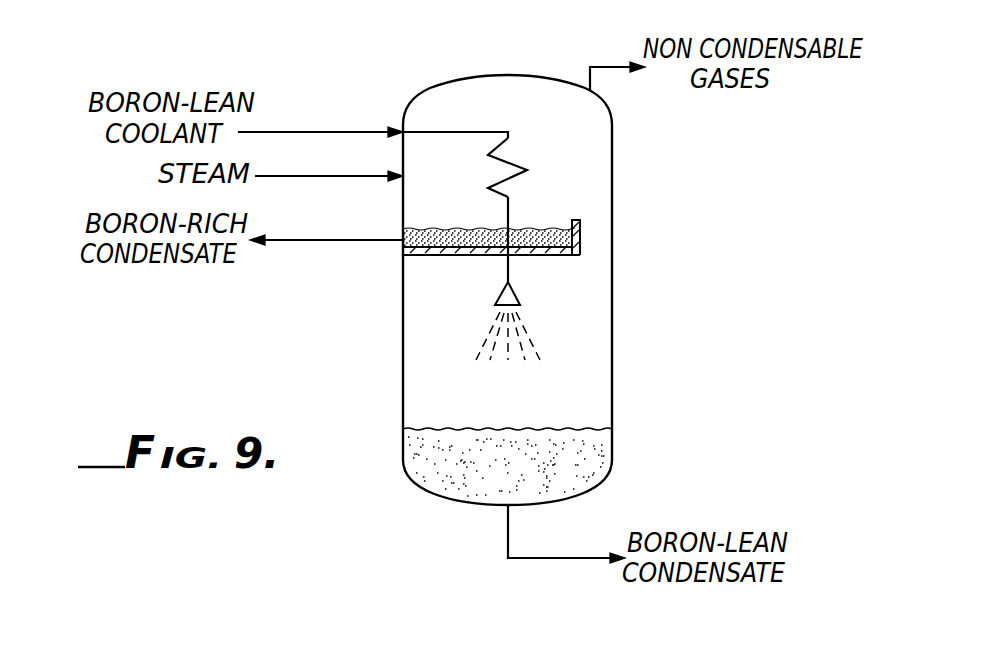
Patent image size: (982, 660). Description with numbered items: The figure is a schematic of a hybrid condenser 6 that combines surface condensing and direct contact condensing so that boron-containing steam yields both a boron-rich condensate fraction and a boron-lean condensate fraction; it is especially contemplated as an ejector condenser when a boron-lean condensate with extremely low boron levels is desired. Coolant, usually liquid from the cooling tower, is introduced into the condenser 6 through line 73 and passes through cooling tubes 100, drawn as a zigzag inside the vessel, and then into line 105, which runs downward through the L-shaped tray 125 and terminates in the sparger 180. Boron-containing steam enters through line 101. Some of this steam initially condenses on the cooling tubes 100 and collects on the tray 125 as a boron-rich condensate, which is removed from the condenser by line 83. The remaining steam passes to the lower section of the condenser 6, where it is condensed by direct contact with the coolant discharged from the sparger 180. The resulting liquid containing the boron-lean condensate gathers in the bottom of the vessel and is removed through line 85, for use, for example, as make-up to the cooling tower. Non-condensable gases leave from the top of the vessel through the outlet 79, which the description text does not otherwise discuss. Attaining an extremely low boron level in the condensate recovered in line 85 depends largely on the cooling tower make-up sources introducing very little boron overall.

The condenser 6 is at (614, 312).
The line 73 is at (320, 130).
The non-condensable gases outlet 79 is at (614, 64).
The line 83 is at (308, 240).
The line 85 is at (506, 534).
The cooling tubes 100 is at (527, 170).
The line 101 is at (326, 160).
The line 105 is at (510, 268).
The L-shaped tray 125 is at (470, 258).
The sparger 180 is at (521, 300).